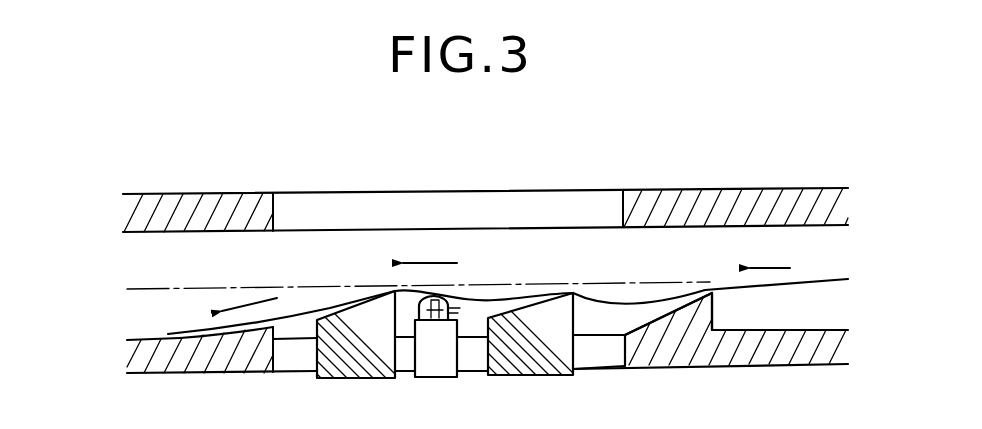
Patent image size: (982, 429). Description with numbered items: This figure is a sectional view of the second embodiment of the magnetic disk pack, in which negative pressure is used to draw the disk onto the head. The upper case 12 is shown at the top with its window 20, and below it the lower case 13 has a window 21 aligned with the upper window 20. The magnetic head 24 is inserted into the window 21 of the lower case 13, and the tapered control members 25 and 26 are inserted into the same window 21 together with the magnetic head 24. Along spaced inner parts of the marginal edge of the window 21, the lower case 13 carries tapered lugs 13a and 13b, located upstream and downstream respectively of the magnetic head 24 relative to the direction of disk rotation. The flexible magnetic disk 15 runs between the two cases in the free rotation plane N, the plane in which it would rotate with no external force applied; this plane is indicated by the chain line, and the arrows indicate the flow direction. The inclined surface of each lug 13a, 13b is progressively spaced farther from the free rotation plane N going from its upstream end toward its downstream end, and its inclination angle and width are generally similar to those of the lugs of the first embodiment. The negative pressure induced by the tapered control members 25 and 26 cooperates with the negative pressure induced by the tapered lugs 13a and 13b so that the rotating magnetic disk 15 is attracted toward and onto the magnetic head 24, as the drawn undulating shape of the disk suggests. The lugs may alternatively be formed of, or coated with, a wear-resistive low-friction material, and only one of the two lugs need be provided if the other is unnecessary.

The upper case 12 is at (683, 190).
The window 20 is at (331, 206).
The lower case 13 is at (160, 367).
The lug 13a is at (682, 317).
The lug 13b is at (237, 337).
The magnetic disk 15 is at (520, 297).
The window 21 is at (598, 358).
The magnetic head 24 is at (428, 322).
The control member 25 is at (350, 372).
The control member 26 is at (528, 367).
The free rotation plane N is at (350, 287).